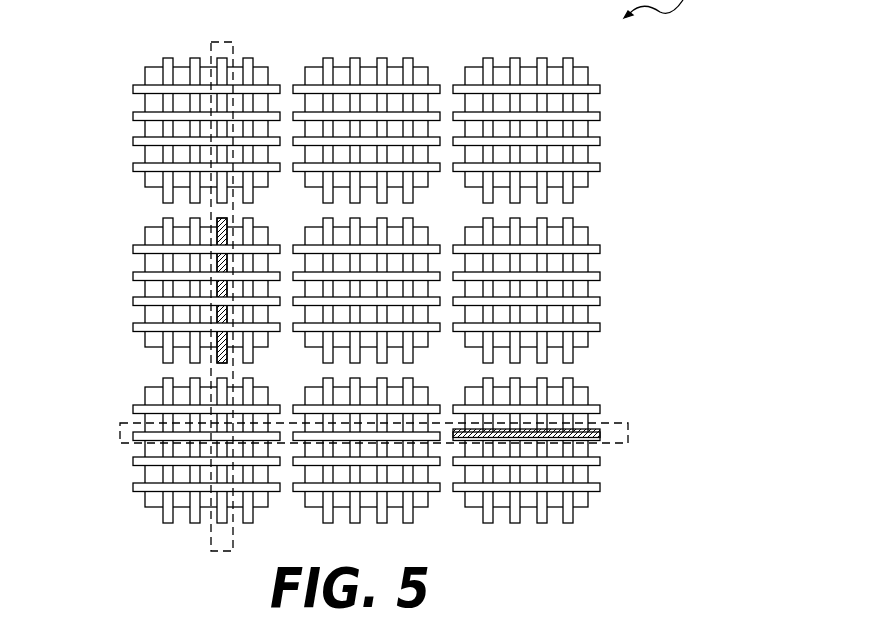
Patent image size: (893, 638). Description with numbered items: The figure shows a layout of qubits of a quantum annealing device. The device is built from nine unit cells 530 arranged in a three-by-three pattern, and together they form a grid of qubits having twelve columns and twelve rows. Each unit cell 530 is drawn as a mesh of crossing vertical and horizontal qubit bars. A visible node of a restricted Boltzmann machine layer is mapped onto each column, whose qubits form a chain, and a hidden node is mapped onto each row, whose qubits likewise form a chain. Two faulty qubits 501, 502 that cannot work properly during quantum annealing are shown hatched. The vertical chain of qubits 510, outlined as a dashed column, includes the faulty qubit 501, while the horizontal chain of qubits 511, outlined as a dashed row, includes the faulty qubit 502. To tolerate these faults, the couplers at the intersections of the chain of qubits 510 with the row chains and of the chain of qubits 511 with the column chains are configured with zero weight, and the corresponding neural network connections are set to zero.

The faulty qubit 501 is at (228, 219).
The faulty qubit 502 is at (600, 431).
The chain of qubits 510 is at (228, 42).
The chain of qubits 511 is at (120, 432).
The unit cell 530 is at (466, 66).